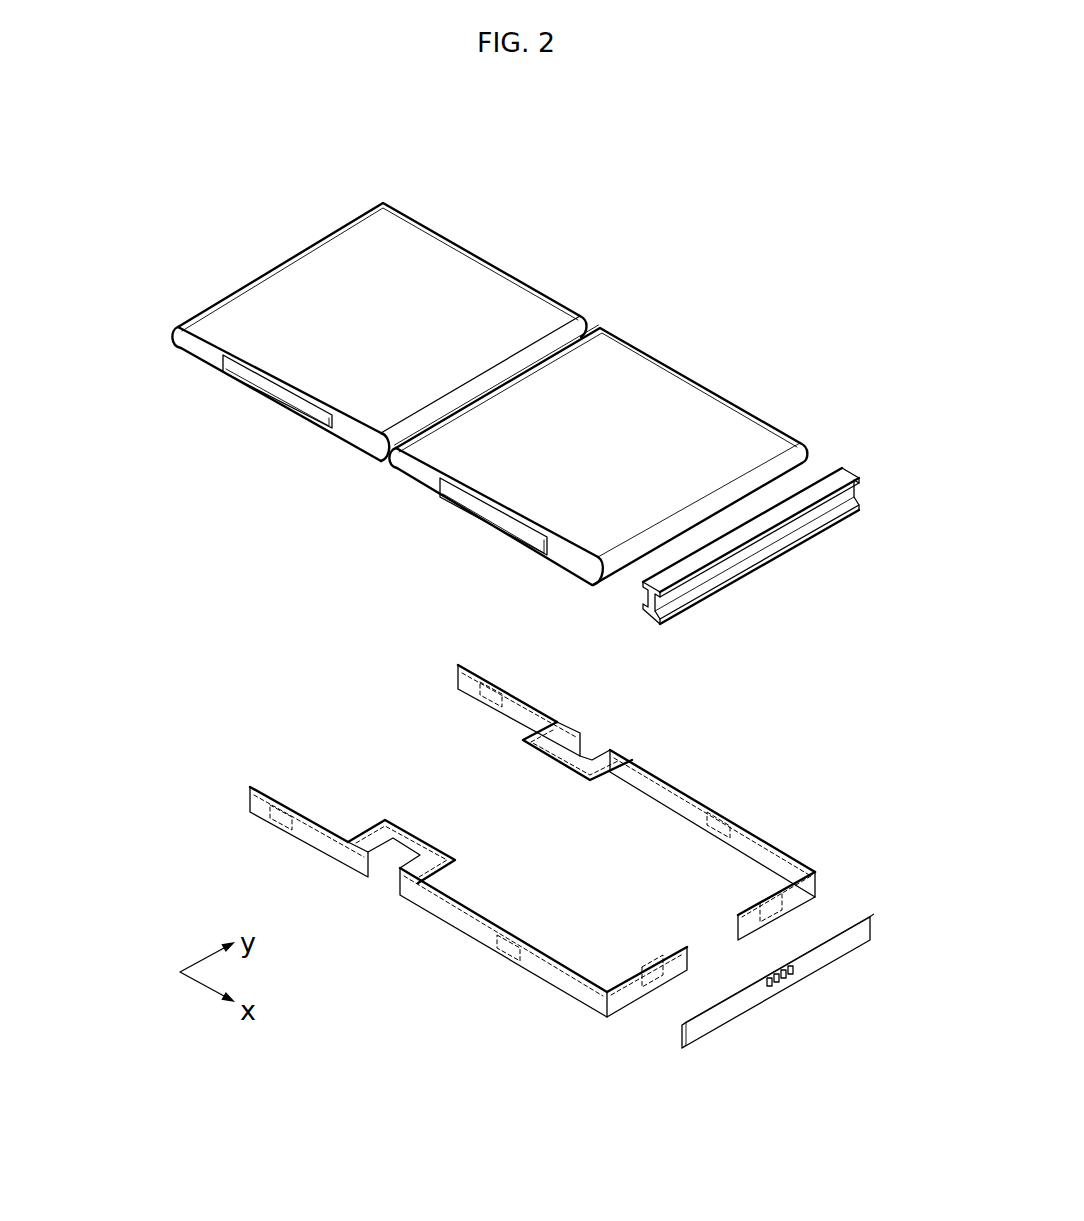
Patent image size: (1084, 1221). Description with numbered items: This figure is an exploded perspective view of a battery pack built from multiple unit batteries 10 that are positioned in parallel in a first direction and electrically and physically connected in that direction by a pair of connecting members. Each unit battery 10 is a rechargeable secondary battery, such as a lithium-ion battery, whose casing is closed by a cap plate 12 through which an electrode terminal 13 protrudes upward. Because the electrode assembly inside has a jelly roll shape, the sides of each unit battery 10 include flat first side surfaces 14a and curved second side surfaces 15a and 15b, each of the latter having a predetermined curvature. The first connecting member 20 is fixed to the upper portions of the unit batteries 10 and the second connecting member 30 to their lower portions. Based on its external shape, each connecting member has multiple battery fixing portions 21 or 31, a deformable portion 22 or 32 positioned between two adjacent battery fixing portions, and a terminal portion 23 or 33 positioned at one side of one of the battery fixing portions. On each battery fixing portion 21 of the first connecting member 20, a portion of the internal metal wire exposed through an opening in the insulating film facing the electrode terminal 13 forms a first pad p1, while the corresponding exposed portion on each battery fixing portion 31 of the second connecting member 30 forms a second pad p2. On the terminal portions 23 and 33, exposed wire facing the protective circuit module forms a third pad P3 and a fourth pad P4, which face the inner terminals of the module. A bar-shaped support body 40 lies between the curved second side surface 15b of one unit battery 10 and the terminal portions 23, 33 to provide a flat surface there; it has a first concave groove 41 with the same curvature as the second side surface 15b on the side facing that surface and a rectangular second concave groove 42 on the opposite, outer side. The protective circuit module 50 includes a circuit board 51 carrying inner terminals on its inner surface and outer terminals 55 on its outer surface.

The unit battery 10 is at (488, 241).
The cap plate 12 is at (208, 357).
The electrode terminal 13 is at (280, 397).
The first side surface 14a is at (307, 272).
The second side surface 15a is at (178, 327).
The second side surface 15b is at (790, 457).
The first connecting member 20 is at (439, 928).
The battery fixing portion 21 is at (317, 840).
The deformable portion 22 is at (413, 842).
The terminal portion 23 is at (620, 997).
The second connecting member 30 is at (651, 791).
The battery fixing portion 31 is at (512, 696).
The deformable portion 32 is at (568, 758).
The terminal portion 33 is at (812, 887).
The support body 40 is at (739, 570).
The first concave groove 41 is at (641, 598).
The second concave groove 42 is at (666, 607).
The protective circuit module 50 is at (778, 996).
The circuit board 51 is at (707, 1028).
The outer terminals 55 is at (787, 975).
The first pad p1 is at (278, 825).
The second pad p2 is at (488, 698).
The third pad P3 is at (653, 983).
The fourth pad P4 is at (762, 910).